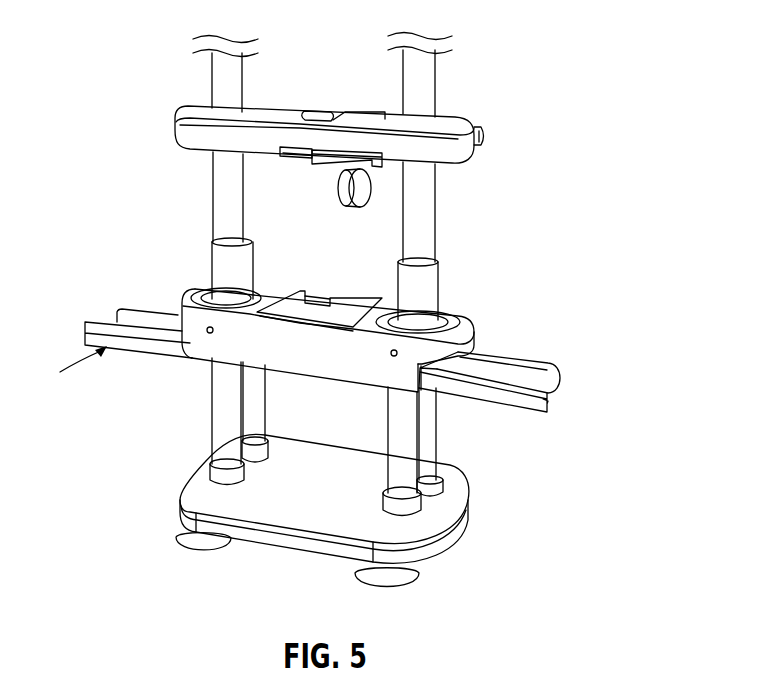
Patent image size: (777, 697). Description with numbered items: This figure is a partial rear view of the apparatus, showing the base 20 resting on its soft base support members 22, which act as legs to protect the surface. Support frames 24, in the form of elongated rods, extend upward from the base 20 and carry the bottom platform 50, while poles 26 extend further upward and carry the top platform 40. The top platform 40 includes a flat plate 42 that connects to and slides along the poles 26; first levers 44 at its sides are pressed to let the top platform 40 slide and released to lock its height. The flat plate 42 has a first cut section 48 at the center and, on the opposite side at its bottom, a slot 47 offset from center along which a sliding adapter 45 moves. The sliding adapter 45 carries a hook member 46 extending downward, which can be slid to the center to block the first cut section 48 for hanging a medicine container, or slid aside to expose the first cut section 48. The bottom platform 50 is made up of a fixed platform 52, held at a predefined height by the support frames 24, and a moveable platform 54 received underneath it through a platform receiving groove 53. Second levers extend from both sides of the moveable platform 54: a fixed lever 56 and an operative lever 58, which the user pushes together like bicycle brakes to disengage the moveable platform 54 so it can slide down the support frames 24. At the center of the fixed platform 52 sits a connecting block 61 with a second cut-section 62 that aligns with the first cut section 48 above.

The base 20 is at (450, 512).
The base support members 22 is at (403, 575).
The support frames 24 is at (225, 397).
The poles 26 is at (420, 68).
The top platform 40 is at (451, 148).
The flat plate 42 is at (377, 120).
The first levers 44 is at (484, 134).
The sliding adapter 45 is at (375, 163).
The hook member 46 is at (353, 202).
The slot 47 is at (297, 155).
The first cut section 48 is at (327, 108).
The bottom platform 50 is at (462, 340).
The fixed platform 52 is at (267, 347).
The platform receiving groove 53 is at (443, 367).
The moveable platform 54 is at (115, 348).
The fixed lever 56 is at (553, 382).
The operative lever 58 is at (548, 400).
The connecting block 61 is at (293, 300).
The second cut-section 62 is at (333, 307).